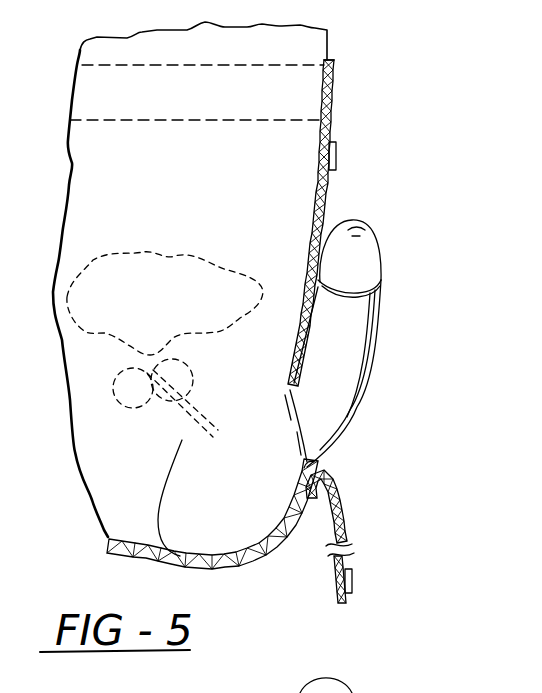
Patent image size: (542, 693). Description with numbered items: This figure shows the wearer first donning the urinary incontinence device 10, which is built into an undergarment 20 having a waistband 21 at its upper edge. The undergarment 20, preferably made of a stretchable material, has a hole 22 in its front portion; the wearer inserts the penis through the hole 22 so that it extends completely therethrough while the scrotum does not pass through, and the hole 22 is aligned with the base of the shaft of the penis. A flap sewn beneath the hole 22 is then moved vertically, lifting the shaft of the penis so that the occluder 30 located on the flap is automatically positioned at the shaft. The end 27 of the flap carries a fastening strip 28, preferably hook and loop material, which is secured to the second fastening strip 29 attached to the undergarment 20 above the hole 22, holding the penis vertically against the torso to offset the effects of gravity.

The urinary incontinence device 10 is at (305, 550).
The undergarment 20 is at (345, 93).
The waistband 21 is at (330, 62).
The hole 22 is at (308, 466).
The end 27 is at (343, 605).
The fastening strip 28 is at (352, 580).
The second fastening strip 29 is at (337, 156).
The occluder 30 is at (342, 504).